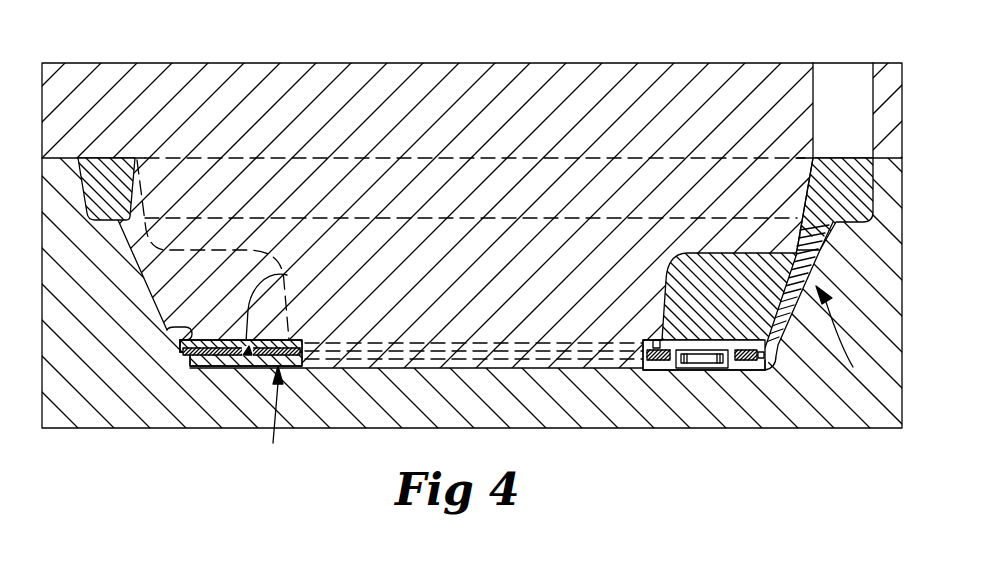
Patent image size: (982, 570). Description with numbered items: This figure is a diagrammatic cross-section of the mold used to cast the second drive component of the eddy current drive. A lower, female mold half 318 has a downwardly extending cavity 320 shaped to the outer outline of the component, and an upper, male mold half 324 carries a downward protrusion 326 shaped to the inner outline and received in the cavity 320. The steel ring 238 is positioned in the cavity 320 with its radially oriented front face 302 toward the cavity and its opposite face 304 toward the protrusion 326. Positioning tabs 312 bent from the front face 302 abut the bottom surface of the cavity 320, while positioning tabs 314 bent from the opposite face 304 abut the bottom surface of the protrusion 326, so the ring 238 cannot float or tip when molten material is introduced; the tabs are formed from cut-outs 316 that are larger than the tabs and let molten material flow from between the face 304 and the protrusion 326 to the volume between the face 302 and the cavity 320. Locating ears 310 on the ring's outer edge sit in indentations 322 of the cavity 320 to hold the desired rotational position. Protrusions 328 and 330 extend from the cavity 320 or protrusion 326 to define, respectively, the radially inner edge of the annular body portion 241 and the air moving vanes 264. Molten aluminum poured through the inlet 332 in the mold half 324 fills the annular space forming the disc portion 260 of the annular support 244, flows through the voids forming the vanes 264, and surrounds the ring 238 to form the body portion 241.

The upper, male mold half 324 is at (275, 63).
The protrusion 326 is at (388, 330).
The protrusions 328 is at (515, 390).
The inlet 332 is at (836, 84).
The protrusions 330 is at (155, 304).
The indentations 322 is at (178, 334).
The positioning tabs 314 is at (287, 275).
The annular disc portion 260 is at (830, 160).
The cavity 320 is at (778, 323).
The air moving vanes 264 is at (742, 311).
The annular support 244 is at (847, 340).
The front face 302 is at (752, 360).
The opposite face 304 is at (656, 340).
The lower, female mold half 318 is at (205, 367).
The annular body portion 241 is at (193, 367).
The cut-outs 316 is at (250, 345).
The positioning tabs 312 is at (698, 368).
The locating ears 310 is at (178, 342).
The ring 238 is at (272, 433).